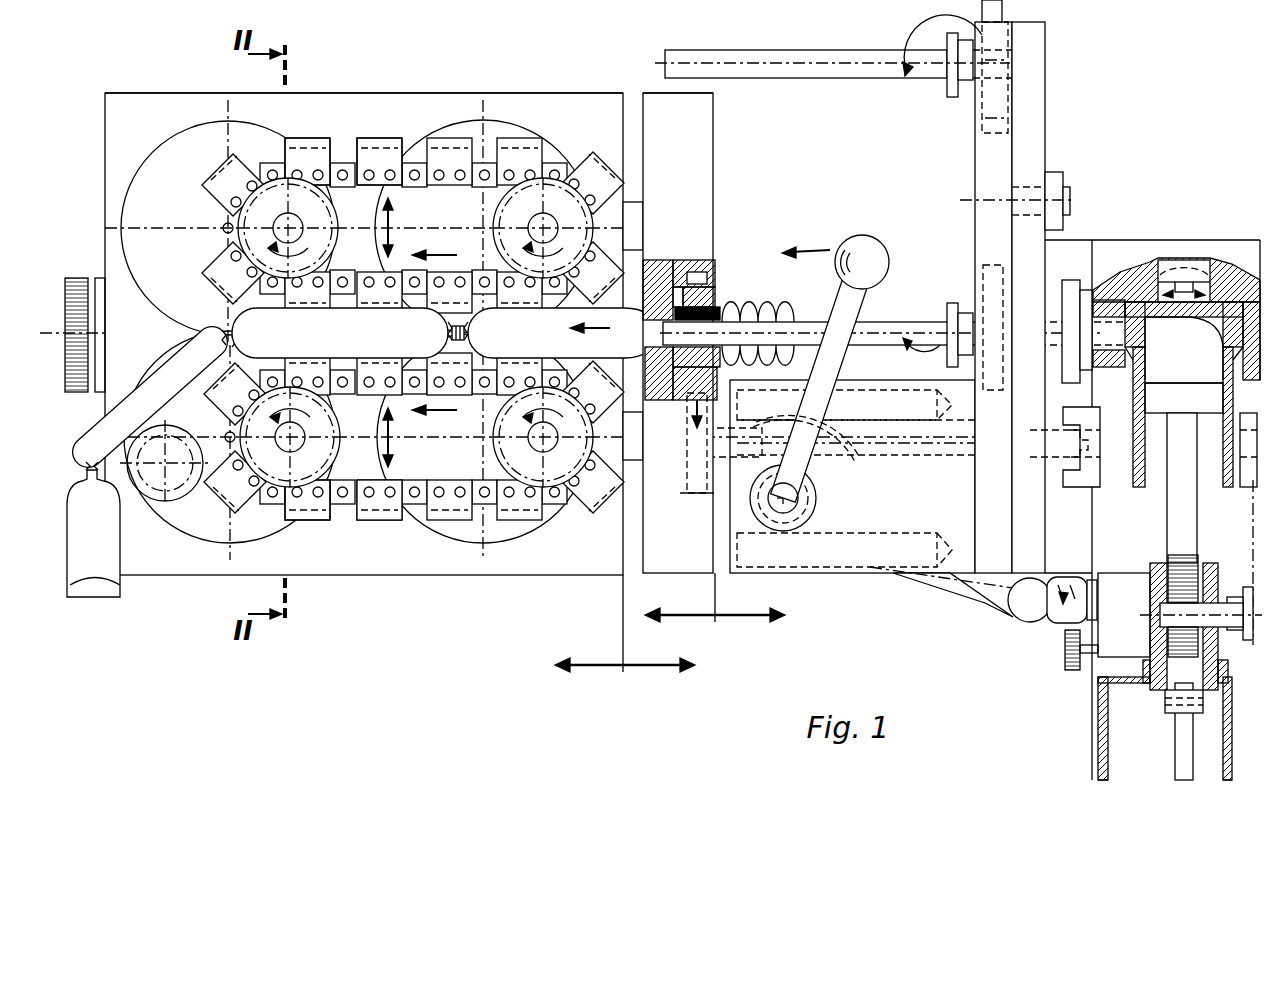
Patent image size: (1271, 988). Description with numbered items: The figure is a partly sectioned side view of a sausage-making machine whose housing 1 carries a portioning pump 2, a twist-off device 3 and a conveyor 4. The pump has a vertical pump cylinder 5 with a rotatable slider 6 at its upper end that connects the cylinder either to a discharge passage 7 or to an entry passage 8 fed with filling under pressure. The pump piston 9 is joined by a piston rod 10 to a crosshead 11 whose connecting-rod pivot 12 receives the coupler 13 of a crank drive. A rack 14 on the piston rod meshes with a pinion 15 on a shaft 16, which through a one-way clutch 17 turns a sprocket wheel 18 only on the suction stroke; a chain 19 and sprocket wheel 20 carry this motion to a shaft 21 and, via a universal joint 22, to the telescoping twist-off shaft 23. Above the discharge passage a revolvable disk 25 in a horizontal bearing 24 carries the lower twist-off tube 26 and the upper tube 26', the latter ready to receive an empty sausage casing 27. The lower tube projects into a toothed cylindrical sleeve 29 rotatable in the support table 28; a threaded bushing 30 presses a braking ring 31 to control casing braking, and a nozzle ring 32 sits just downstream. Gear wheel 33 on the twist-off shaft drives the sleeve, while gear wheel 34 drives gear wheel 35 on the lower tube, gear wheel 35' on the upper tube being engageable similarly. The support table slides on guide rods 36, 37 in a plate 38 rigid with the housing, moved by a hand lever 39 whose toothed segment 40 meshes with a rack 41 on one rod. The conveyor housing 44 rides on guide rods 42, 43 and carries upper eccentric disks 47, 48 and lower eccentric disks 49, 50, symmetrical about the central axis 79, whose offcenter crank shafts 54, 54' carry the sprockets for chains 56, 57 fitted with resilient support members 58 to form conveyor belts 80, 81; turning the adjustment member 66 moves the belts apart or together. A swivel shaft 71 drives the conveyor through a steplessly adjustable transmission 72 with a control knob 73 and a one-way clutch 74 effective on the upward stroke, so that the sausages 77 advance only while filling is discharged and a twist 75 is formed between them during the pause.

The housing 1 is at (1158, 253).
The portioning pump 2 is at (1078, 724).
The twist-off device 3 is at (646, 64).
The conveyor 4 is at (432, 72).
The pump cylinder 5 is at (1130, 395).
The rotatable slider 6 is at (1138, 300).
The discharge passage 7 is at (1108, 298).
The entry passage 8 is at (1250, 300).
The pump piston 9 is at (1183, 402).
The piston rod 10 is at (1175, 535).
The crosshead 11 is at (1130, 682).
The connecting-rod pivot 12 is at (1168, 705).
The coupler 13 is at (1183, 745).
The rack 14 is at (1178, 563).
The pinion 15 is at (1158, 580).
The shaft 16 is at (1203, 647).
The one-way clutch 17 is at (1235, 630).
The sprocket wheel 18 is at (1248, 588).
The chain 19 is at (1250, 520).
The sprocket wheel 20 is at (1245, 472).
The shaft 21 is at (1120, 460).
The universal joint 22 is at (1075, 482).
The twist-off shaft 23 is at (930, 457).
The bearing 24 is at (1030, 187).
The revolvable disk 25 is at (985, 163).
The lower twist-off tube 26 is at (892, 315).
The upper filling tube 26' is at (833, 67).
The sausage casing 27 is at (787, 307).
The support table 28 is at (707, 216).
The cylindrical sleeve 29 is at (705, 292).
The bushing 30 is at (718, 312).
The braking ring 31 is at (690, 272).
The nozzle ring 32 is at (660, 278).
The gear wheel 33 is at (690, 503).
The gear wheel 34 is at (975, 462).
The gear wheel 35 is at (964, 313).
The gear wheel 35' is at (1044, 66).
The guide rod 36 is at (725, 394).
The guide rod 37 is at (725, 576).
The plate 38 is at (845, 575).
The lever 39 is at (880, 252).
The toothed segment 40 is at (838, 478).
The rack 41 is at (866, 418).
The guide rod 42 is at (636, 216).
The guide rod 43 is at (636, 455).
The conveyor housing 44 is at (578, 565).
The upper eccentric disk 47 is at (228, 228).
The upper eccentric disk 48 is at (497, 132).
The lower eccentric disk 49 is at (187, 522).
The lower eccentric disk 50 is at (502, 530).
The crank shaft 54 is at (271, 333).
The crank shaft 54' is at (558, 332).
The chain 56 is at (345, 276).
The chain 57 is at (345, 396).
The support member 58 is at (315, 150).
The adjustment member 66 is at (78, 280).
The swivel shaft 71 is at (960, 592).
The transmission 72 is at (1124, 615).
The control knob 73 is at (1065, 652).
The one-way clutch 74 is at (1160, 607).
The twist 75 is at (450, 333).
The sausage 77 is at (375, 380).
The central axis 79 is at (240, 340).
The conveyor belt 80 is at (410, 160).
The conveyor belt 81 is at (322, 527).